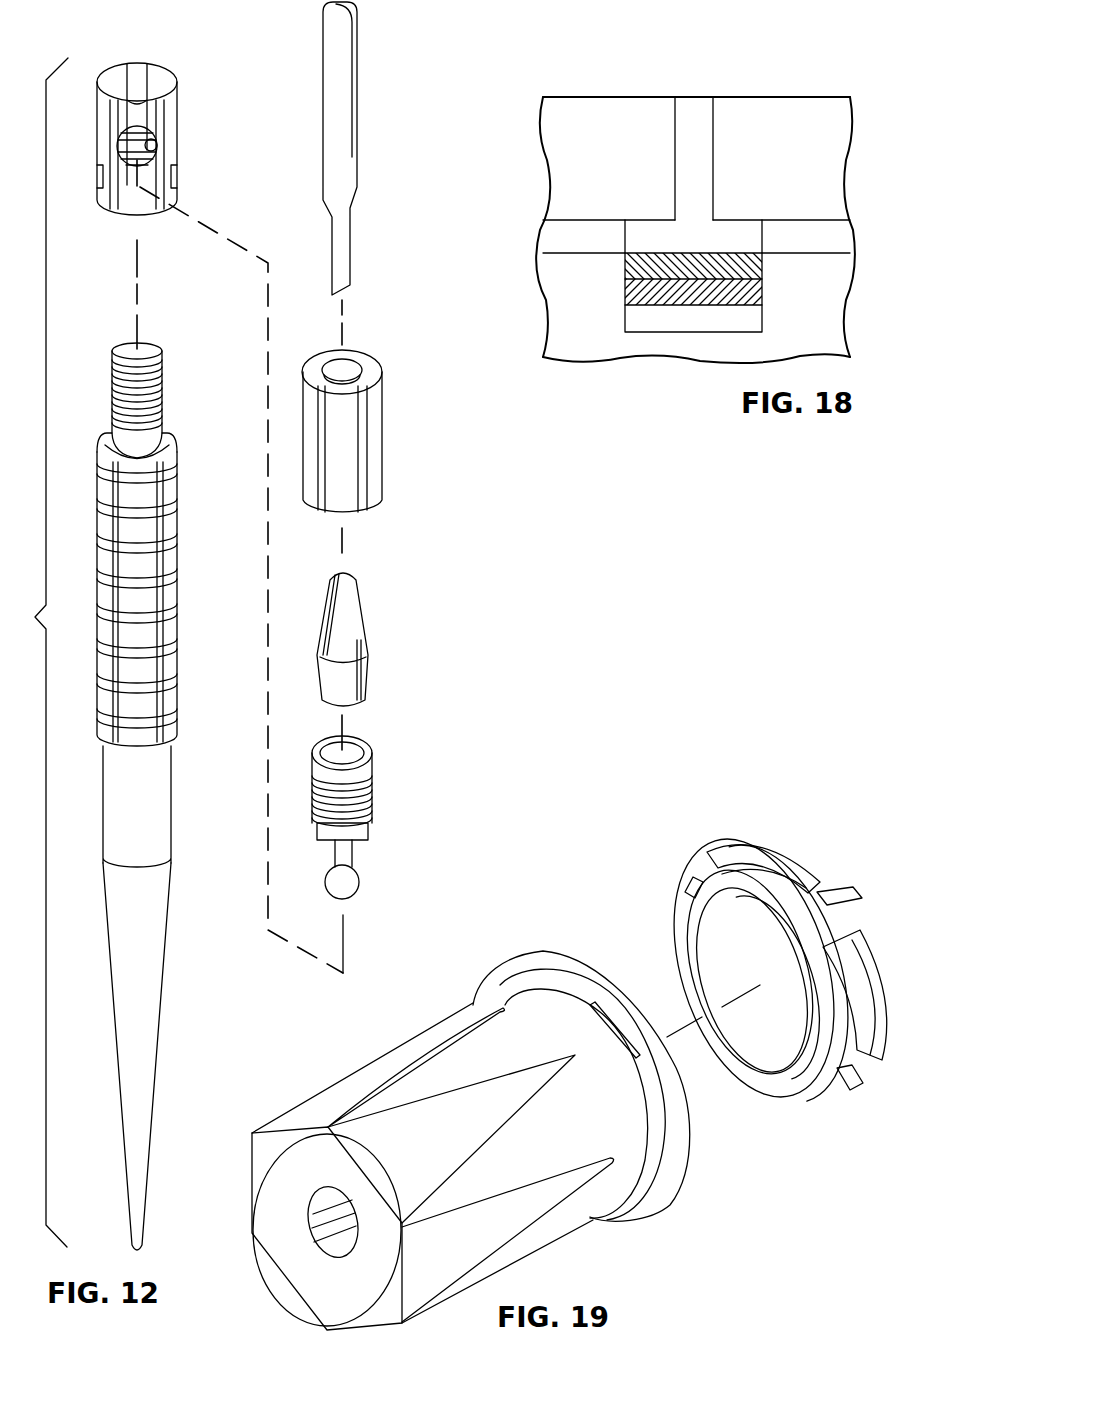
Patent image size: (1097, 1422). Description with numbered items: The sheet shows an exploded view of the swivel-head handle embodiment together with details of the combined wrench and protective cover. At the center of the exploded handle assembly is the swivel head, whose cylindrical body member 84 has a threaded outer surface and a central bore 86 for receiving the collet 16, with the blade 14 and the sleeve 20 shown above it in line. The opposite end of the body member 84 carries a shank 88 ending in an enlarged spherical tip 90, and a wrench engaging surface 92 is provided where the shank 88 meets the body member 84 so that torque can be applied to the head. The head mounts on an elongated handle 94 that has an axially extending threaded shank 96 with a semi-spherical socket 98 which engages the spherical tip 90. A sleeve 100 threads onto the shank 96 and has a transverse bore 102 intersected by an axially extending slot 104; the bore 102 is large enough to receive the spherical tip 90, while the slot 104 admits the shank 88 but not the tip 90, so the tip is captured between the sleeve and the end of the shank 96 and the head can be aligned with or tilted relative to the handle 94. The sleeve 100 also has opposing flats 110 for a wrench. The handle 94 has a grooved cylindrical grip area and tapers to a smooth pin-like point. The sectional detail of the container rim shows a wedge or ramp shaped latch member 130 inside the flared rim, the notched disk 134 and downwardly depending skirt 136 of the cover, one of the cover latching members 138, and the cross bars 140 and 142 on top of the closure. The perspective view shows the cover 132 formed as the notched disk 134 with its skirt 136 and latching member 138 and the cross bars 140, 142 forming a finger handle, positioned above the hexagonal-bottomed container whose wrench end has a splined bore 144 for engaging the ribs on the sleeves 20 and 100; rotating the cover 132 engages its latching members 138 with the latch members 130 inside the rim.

In FIG. 12, the blade 14 is at (345, 68).
In FIG. 12, the collet 16 is at (375, 612).
In FIG. 12, the sleeve 20 is at (383, 426).
In FIG. 12, the cylindrical body member 84 is at (373, 786).
In FIG. 12, the central bore 86 is at (357, 752).
In FIG. 12, the shank 88 is at (353, 852).
In FIG. 12, the spherical tip 90 is at (357, 880).
In FIG. 12, the wrench engaging surface 92 is at (368, 835).
In FIG. 12, the elongated handle 94 is at (170, 800).
In FIG. 12, the threaded shank 96 is at (165, 392).
In FIG. 12, the semi-spherical socket 98 is at (142, 347).
In FIG. 12, the sleeve 100 is at (172, 116).
In FIG. 12, the transverse bore 102 is at (153, 156).
In FIG. 12, the axially extending slot 104 is at (138, 97).
In FIG. 12, the opposing flats 110 is at (180, 177).
In FIG. 18, the latch member 130 is at (716, 253).
In FIG. 19, the cover 132 is at (768, 828).
In FIG. 18, the notched disk 134 is at (584, 220).
In FIG. 19, the notched disk 134 is at (807, 858).
In FIG. 18, the downwardly depending skirt 136 is at (585, 340).
In FIG. 19, the downwardly depending skirt 136 is at (742, 873).
In FIG. 18, the latching member 138 is at (650, 305).
In FIG. 19, the latching member 138 is at (817, 930).
In FIG. 18, the cross bar 140 is at (596, 97).
In FIG. 18, the cross bar 142 is at (695, 105).
In FIG. 19, the cross bar 142 is at (860, 895).
In FIG. 19, the splined bore 144 is at (322, 1222).